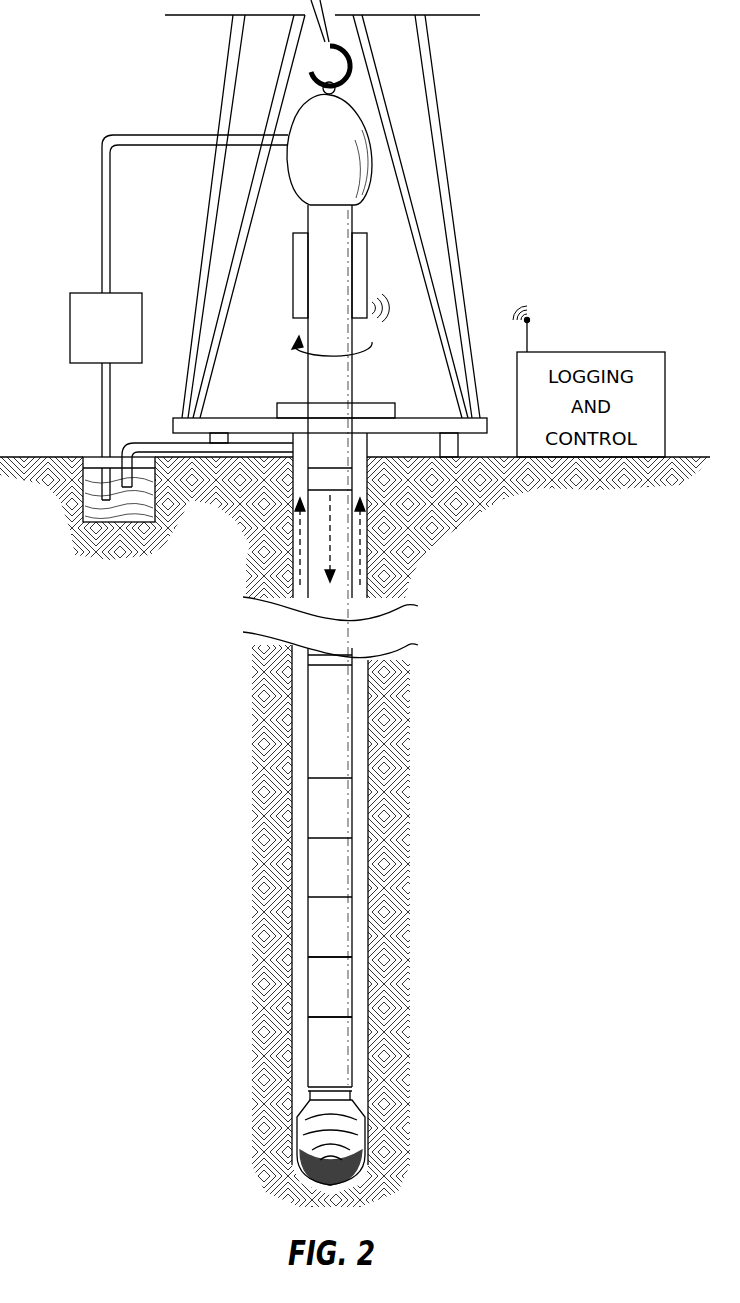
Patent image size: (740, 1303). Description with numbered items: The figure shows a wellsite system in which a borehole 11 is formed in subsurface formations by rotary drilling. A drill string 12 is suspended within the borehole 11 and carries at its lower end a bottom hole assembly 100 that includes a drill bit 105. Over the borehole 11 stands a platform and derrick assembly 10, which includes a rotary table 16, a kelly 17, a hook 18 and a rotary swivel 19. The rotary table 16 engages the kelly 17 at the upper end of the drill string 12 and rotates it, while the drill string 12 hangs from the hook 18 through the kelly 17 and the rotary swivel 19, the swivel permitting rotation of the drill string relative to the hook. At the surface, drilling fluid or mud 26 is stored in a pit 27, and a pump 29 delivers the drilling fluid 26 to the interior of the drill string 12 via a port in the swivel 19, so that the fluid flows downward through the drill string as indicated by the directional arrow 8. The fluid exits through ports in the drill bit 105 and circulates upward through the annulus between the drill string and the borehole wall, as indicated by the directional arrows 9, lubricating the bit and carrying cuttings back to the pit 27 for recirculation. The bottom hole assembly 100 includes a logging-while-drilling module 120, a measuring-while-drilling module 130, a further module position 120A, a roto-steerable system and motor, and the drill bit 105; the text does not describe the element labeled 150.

The platform and derrick assembly 10 is at (458, 114).
The hook 18 is at (352, 70).
The rotary swivel 19 is at (303, 181).
The pump 29 is at (90, 363).
The pit 27 is at (93, 452).
The drilling fluid or mud 26 is at (117, 512).
The kelly 17 is at (315, 398).
The rotary table 16 is at (376, 414).
The borehole 11 is at (362, 455).
The directional arrow 8 is at (323, 545).
The drill string 12 is at (330, 455).
The directional arrows 9 is at (298, 524).
The logging-while-drilling (LWD) module 120 is at (315, 866).
The measuring-while-drilling (MWD) module 130 is at (315, 927).
The LWD module 120A is at (315, 986).
The drill string section 150 is at (315, 1046).
The drill bit 105 is at (305, 1135).
The bottom hole assembly 100 is at (472, 778).